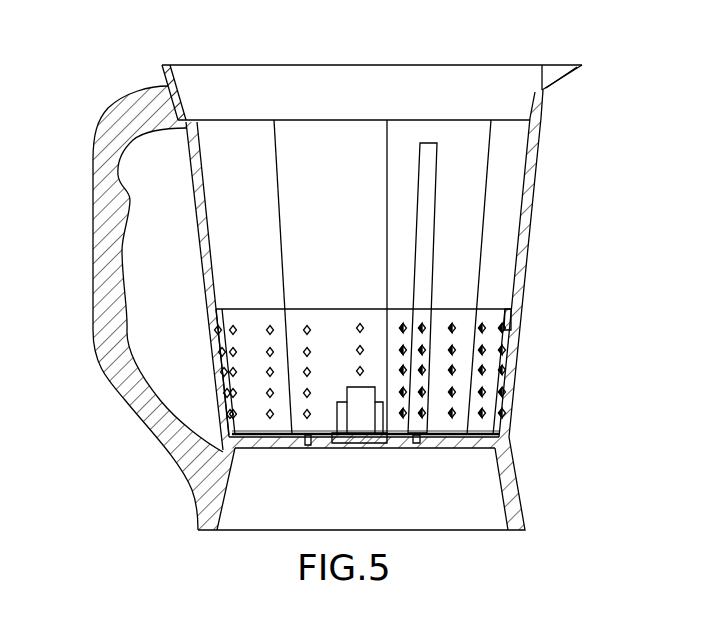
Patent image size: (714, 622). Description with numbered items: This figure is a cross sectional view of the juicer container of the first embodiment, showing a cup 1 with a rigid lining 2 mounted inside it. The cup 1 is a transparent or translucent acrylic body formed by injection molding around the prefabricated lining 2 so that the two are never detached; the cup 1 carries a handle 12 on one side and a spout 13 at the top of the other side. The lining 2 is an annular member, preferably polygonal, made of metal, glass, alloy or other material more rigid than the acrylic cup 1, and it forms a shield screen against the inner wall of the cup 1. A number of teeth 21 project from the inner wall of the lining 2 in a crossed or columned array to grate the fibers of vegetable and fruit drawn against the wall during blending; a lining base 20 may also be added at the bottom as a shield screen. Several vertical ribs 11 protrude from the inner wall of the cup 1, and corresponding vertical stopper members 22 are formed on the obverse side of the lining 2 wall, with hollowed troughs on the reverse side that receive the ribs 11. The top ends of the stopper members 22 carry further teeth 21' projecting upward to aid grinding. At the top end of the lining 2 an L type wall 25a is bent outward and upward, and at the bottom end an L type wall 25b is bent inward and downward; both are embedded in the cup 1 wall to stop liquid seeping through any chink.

The cup 1 is at (538, 147).
The vertical rib 11 is at (428, 148).
The handle 12 is at (110, 215).
The spout 13 is at (558, 73).
The rigid lining 2 is at (462, 313).
The filter bottom 20 is at (470, 420).
The teeth 21 is at (516, 371).
The projected teeth 21' is at (408, 319).
The vertical stopper member 22 is at (422, 382).
The L type wall 25a is at (522, 301).
The L type wall 25b is at (417, 440).